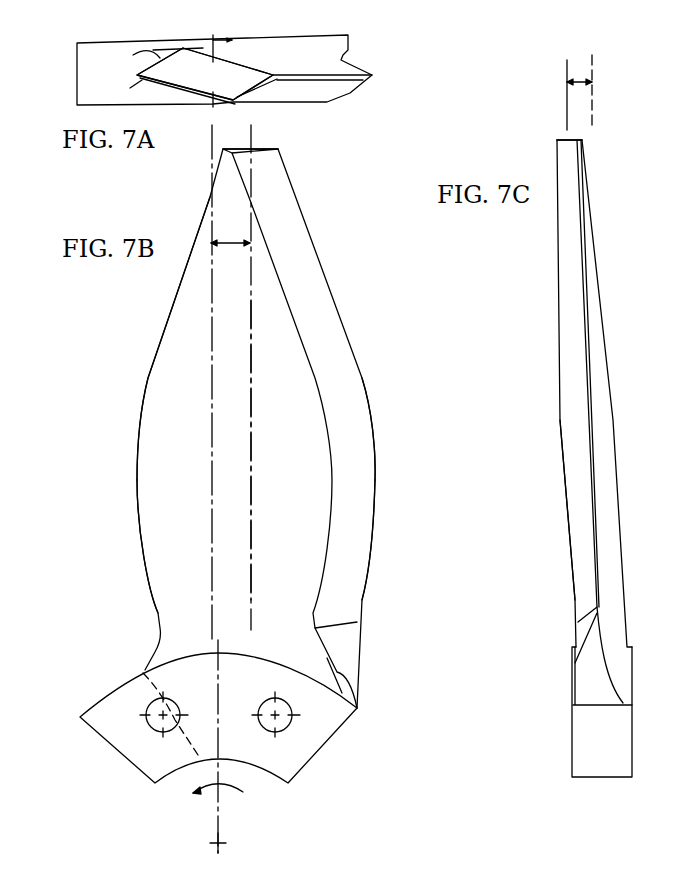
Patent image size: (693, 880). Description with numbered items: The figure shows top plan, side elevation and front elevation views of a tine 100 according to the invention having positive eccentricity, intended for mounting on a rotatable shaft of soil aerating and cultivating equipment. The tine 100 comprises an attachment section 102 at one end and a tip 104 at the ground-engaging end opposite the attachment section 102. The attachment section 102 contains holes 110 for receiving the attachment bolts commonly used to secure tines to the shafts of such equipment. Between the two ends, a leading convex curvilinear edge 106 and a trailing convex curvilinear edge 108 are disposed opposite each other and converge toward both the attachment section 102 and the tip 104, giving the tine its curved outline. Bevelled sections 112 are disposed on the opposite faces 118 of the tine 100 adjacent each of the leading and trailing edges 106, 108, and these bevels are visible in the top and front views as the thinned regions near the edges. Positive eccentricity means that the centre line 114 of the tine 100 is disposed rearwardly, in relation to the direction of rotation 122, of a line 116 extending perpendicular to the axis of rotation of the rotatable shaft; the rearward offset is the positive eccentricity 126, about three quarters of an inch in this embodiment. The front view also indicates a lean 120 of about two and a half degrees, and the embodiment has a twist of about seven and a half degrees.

In FIG. 7A, the tine 100 is at (430, 70).
In FIG. 7B, the tine 100 is at (118, 334).
In FIG. 7C, the tine 100 is at (640, 222).
In FIG. 7B, the attachment section 102 is at (335, 723).
In FIG. 7C, the attachment section 102 is at (583, 738).
In FIG. 7B, the tip 104 is at (267, 148).
In FIG. 7C, the tip 104 is at (557, 140).
In FIG. 7B, the leading convex curvilinear edge 106 is at (137, 465).
In FIG. 7B, the trailing convex curvilinear edge 108 is at (368, 410).
In FIG. 7B, the holes 110 is at (288, 723).
In FIG. 7A, the bevelled sections 112 is at (295, 88).
In FIG. 7B, the bevelled sections 112 is at (358, 476).
In FIG. 7C, the bevelled sections 112 is at (562, 372).
In FIG. 7B, the centre line 114 is at (253, 358).
In FIG. 7B, the line perpendicular to the axis of rotation 116 is at (210, 380).
In FIG. 7B, the faces 118 is at (297, 473).
In FIG. 7C, the lean 120 is at (582, 83).
In FIG. 7B, the direction of rotation 122 is at (236, 799).
In FIG. 7B, the positive eccentricity 126 is at (231, 232).